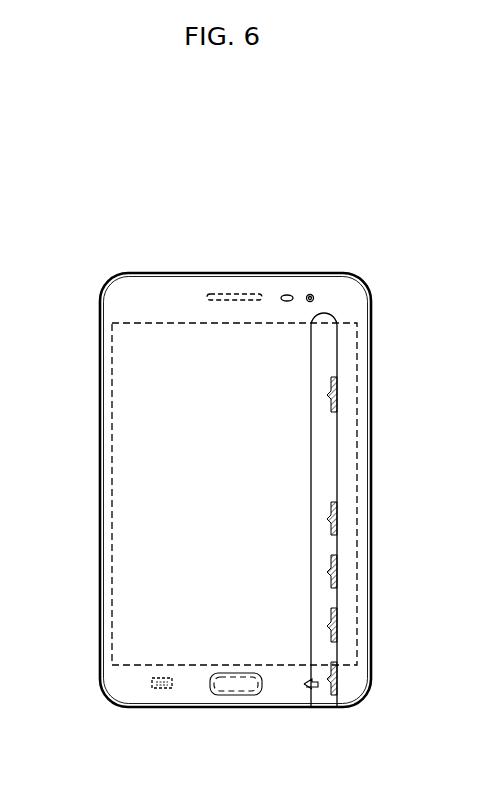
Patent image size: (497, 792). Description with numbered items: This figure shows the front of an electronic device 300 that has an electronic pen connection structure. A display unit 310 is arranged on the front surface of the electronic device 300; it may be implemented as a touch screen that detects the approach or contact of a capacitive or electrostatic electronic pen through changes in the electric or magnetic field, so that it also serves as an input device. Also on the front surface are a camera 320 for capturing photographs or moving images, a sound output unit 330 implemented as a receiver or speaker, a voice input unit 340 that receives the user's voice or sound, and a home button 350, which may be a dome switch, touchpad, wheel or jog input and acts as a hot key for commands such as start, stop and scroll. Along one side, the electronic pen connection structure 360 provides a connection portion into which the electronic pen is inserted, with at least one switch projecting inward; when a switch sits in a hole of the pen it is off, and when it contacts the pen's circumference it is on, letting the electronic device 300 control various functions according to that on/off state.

The electronic device 300 is at (99, 345).
The display unit 310 is at (122, 404).
The camera 320 is at (311, 294).
The sound output unit 330 is at (238, 293).
The voice input unit 340 is at (282, 294).
The home button 350 is at (162, 690).
The electronic pen connection structure 360 is at (327, 445).